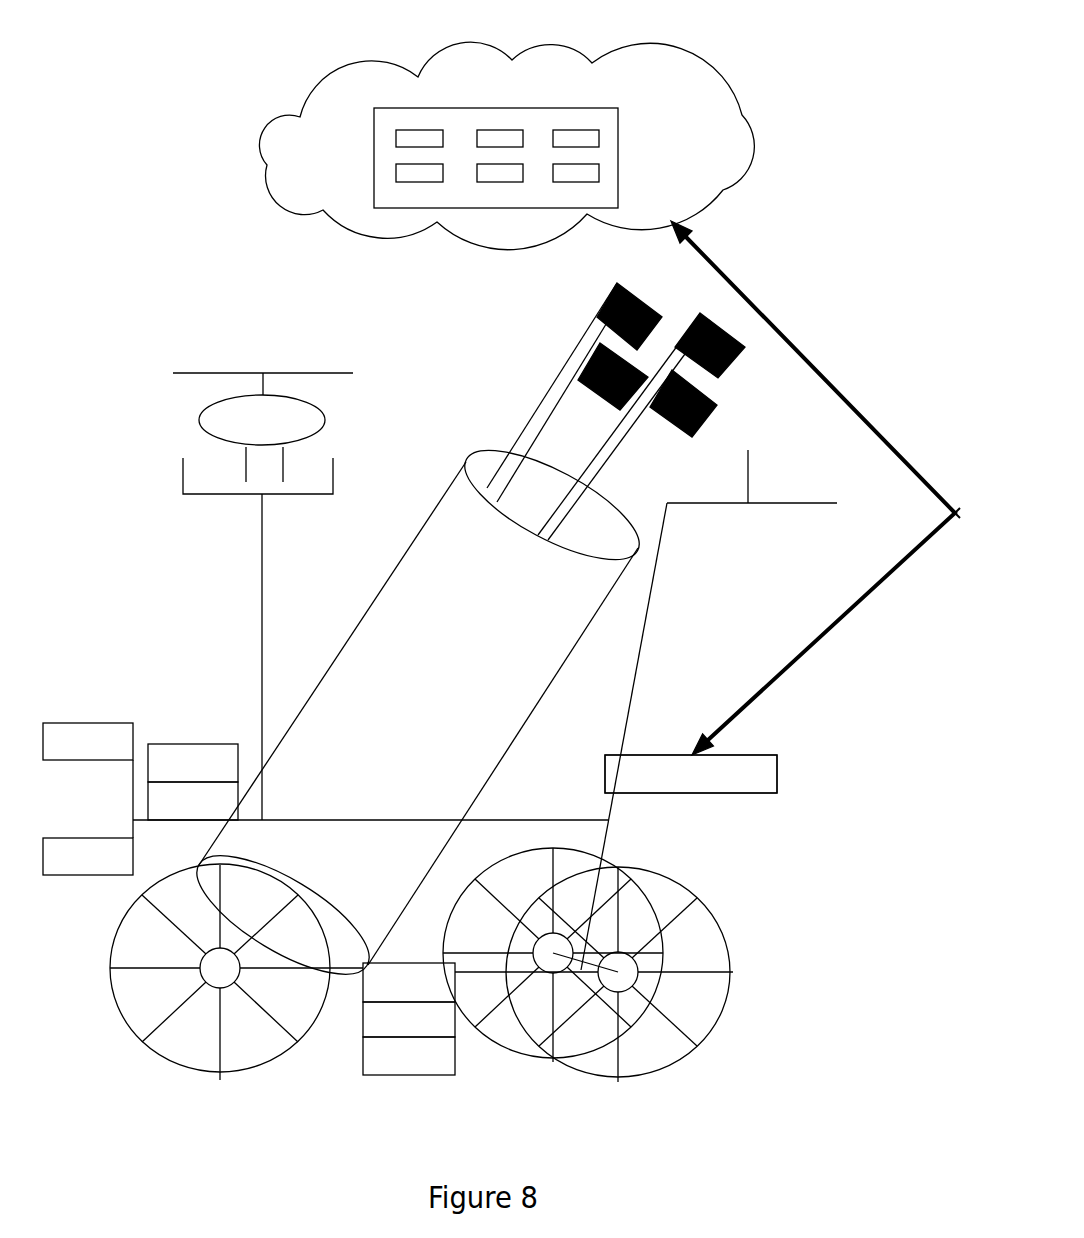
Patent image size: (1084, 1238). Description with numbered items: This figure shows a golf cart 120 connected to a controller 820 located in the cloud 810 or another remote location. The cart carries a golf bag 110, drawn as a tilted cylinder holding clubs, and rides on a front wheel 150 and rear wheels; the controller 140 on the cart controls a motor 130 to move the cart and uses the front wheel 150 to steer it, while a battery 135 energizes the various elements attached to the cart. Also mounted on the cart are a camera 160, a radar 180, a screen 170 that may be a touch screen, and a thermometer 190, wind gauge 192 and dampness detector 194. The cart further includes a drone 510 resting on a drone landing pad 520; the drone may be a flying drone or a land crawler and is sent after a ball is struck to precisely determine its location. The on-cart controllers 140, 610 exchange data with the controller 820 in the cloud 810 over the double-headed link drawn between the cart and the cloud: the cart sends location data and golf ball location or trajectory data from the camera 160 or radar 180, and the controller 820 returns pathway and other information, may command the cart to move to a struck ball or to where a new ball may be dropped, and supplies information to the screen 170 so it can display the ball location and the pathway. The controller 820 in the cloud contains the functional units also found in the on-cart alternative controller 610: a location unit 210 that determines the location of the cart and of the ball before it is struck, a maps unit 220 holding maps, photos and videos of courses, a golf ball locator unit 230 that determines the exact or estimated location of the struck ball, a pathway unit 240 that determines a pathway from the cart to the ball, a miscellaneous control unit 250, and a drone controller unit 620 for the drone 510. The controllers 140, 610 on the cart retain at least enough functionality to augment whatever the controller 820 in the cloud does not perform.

The golf bag 110 is at (416, 712).
The golf cart 120 is at (685, 668).
The motor 130 is at (409, 982).
The battery 135 is at (409, 1020).
The controller 140 is at (691, 774).
The front wheel 150 is at (167, 1073).
The camera 160 is at (88, 741).
The screen 170 is at (772, 487).
The radar 180 is at (88, 856).
The thermometer 190 is at (193, 763).
The wind gauge 192 is at (193, 801).
The dampness detector 194 is at (409, 1056).
The location unit 210 is at (396, 138).
The maps unit 220 is at (473, 137).
The golf ball locator unit 230 is at (599, 139).
The pathway unit 240 is at (396, 174).
The miscellaneous control unit 250 is at (497, 182).
The drone 510 is at (262, 409).
The drone landing pad 520 is at (220, 500).
The alternative controller 610 is at (691, 774).
The drone controller unit 620 is at (599, 175).
The cloud 810 is at (506, 133).
The controller in the cloud 820 is at (496, 139).